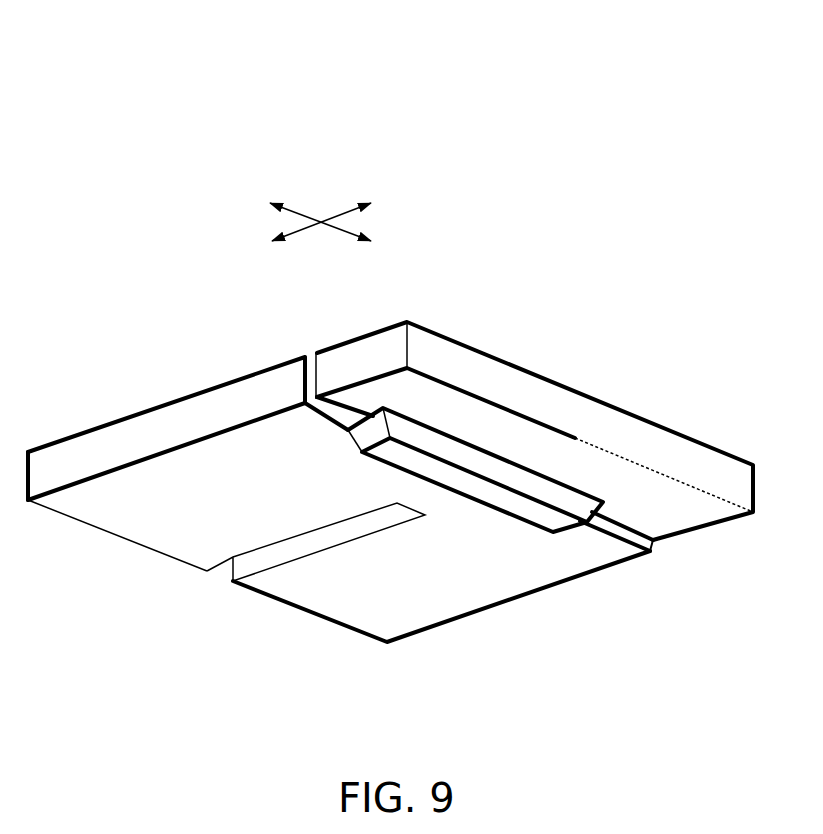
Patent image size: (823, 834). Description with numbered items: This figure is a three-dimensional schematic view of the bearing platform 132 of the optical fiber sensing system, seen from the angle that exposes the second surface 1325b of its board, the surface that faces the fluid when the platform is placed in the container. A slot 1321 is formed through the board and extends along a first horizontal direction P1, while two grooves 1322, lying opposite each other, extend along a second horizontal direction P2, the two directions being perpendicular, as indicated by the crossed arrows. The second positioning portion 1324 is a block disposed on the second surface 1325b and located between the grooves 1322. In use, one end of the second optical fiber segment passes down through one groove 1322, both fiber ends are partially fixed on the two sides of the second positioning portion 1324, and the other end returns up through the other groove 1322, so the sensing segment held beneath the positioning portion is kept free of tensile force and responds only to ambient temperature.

The bearing platform 132 is at (205, 36).
The slot 1321 is at (343, 535).
The grooves 1322 is at (310, 356).
The second positioning portion 1324 is at (373, 437).
The second surface 1325b is at (173, 490).
The first horizontal direction P1 is at (337, 213).
The second horizontal direction P2 is at (309, 209).